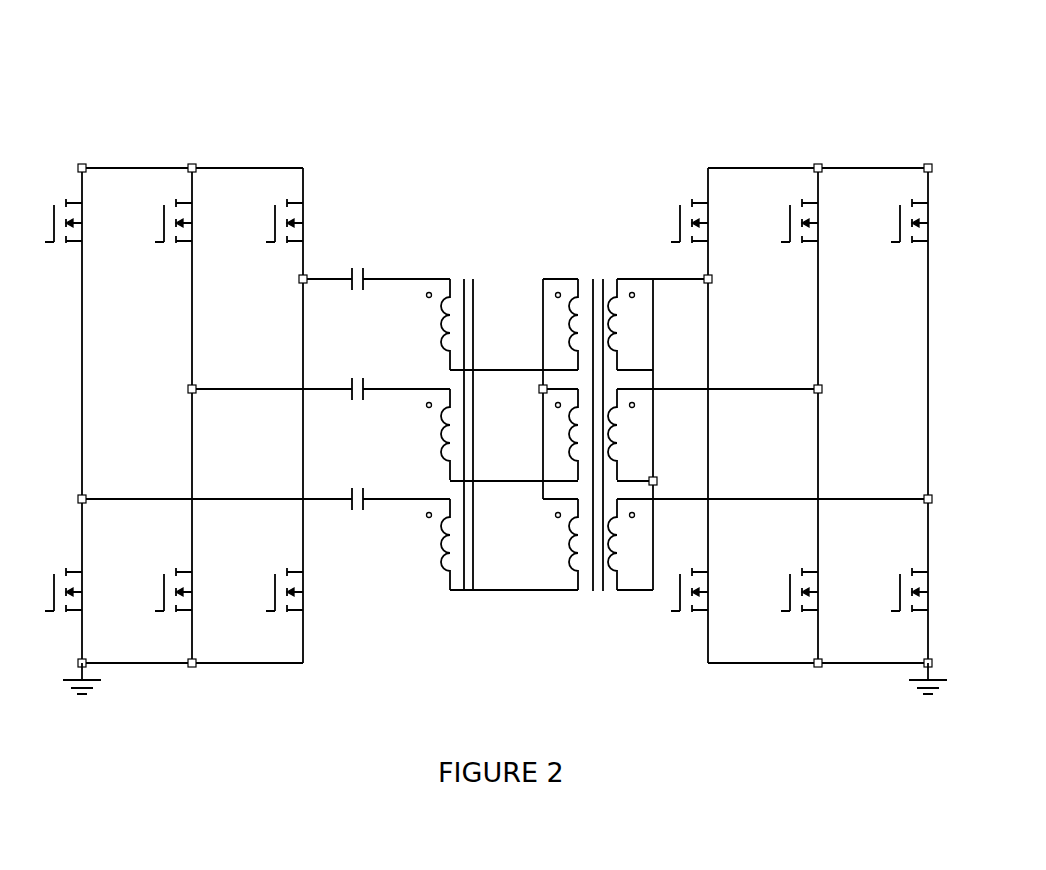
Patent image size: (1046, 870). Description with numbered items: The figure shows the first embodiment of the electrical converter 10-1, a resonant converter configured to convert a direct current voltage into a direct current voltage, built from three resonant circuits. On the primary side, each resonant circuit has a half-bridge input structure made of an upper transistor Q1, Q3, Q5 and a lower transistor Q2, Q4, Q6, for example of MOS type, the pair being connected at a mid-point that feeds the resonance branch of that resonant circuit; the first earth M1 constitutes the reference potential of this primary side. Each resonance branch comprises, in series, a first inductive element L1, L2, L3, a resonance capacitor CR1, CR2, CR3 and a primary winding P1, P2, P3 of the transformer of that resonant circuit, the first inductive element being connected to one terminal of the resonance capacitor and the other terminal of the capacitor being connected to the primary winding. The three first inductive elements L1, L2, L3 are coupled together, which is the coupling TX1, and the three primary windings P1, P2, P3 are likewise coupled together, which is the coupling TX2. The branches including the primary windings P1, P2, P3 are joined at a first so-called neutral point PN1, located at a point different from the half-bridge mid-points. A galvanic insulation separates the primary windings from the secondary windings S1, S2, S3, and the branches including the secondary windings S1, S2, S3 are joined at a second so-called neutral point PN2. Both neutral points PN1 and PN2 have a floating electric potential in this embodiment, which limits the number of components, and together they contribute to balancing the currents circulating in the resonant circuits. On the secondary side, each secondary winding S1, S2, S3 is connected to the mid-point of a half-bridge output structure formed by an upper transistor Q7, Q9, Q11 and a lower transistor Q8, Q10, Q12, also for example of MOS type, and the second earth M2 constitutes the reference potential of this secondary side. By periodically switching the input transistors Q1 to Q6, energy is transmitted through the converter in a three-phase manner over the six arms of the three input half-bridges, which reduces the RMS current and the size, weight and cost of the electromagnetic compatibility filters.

The converter 10-1 is at (574, 97).
The upper transistor Q1 is at (63, 233).
The lower transistor Q2 is at (63, 579).
The upper transistor Q3 is at (173, 233).
The lower transistor Q4 is at (173, 579).
The upper transistor Q5 is at (283, 233).
The lower transistor Q6 is at (284, 579).
The upper transistor Q7 is at (702, 221).
The lower transistor Q8 is at (702, 590).
The upper transistor Q9 is at (812, 221).
The lower transistor Q10 is at (815, 590).
The upper transistor Q11 is at (926, 221).
The lower transistor Q12 is at (925, 590).
The resonance capacitor CR1 is at (356, 270).
The resonance capacitor CR2 is at (356, 380).
The resonance capacitor CR3 is at (356, 491).
The coupling TX1 is at (472, 426).
The coupling TX2 is at (598, 424).
The first inductive element L1 is at (431, 324).
The first inductive element L2 is at (431, 434).
The first inductive element L3 is at (431, 544).
The primary winding P1 is at (562, 324).
The primary winding P2 is at (562, 434).
The primary winding P3 is at (562, 544).
The secondary winding S1 is at (626, 324).
The secondary winding S2 is at (626, 434).
The secondary winding S3 is at (626, 544).
The first neutral point PN1 is at (529, 389).
The second neutral point PN2 is at (666, 481).
The first earth M1 is at (82, 691).
The second earth M2 is at (928, 691).